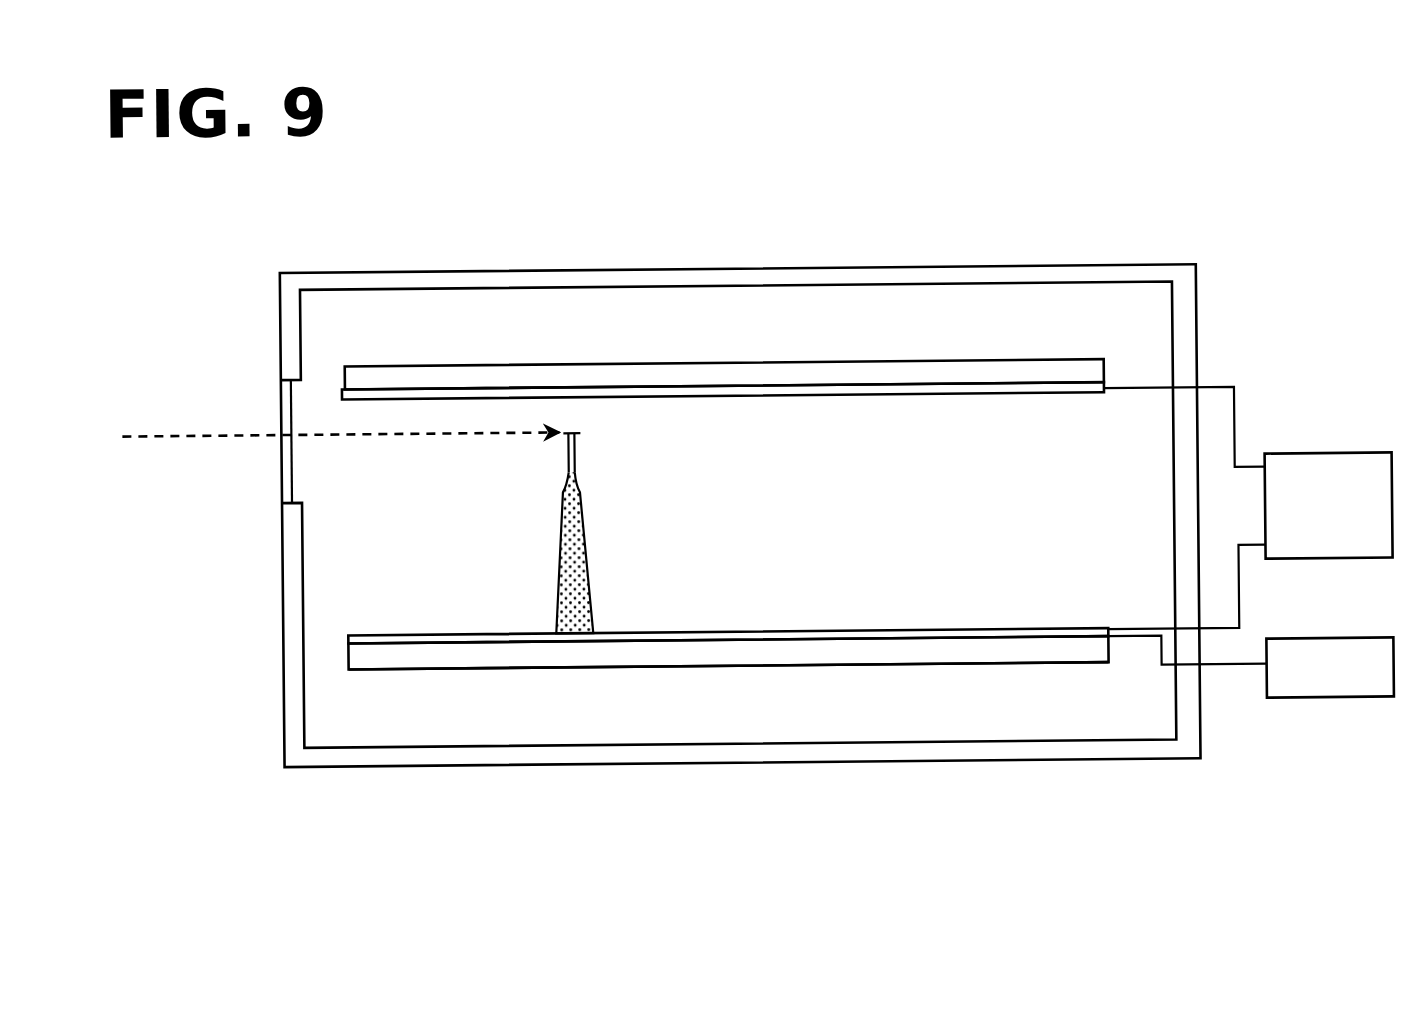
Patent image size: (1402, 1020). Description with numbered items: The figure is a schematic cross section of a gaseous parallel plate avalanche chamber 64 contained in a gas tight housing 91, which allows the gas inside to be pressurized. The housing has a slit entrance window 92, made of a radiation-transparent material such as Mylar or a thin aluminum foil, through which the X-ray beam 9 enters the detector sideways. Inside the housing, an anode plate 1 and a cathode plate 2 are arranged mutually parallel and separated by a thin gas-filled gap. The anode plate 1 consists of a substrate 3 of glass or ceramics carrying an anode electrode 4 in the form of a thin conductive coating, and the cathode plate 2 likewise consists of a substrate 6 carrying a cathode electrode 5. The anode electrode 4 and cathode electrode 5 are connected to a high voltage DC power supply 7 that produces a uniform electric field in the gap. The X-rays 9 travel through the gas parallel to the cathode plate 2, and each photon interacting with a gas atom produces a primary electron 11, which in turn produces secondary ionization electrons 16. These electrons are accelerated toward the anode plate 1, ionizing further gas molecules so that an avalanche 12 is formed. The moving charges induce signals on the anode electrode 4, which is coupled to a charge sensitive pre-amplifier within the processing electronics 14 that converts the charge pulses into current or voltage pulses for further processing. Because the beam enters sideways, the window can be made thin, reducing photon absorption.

The gaseous parallel plate avalanche chamber 64 is at (743, 211).
The gas tight housing 91 is at (437, 281).
The slit entrance window 92 is at (285, 465).
The X-rays 9 is at (127, 433).
The cathode plate 2 is at (960, 357).
The substrate 6 is at (1020, 380).
The cathode electrode 5 is at (1095, 400).
The primary electron 11 is at (582, 433).
The secondary ionization electrons 16 is at (582, 444).
The avalanche 12 is at (582, 551).
The anode electrode 4 is at (963, 635).
The substrate 3 is at (1010, 663).
The anode plate 1 is at (958, 680).
The high voltage DC power supply 7 is at (1329, 505).
The processing electronics 14 is at (1330, 667).